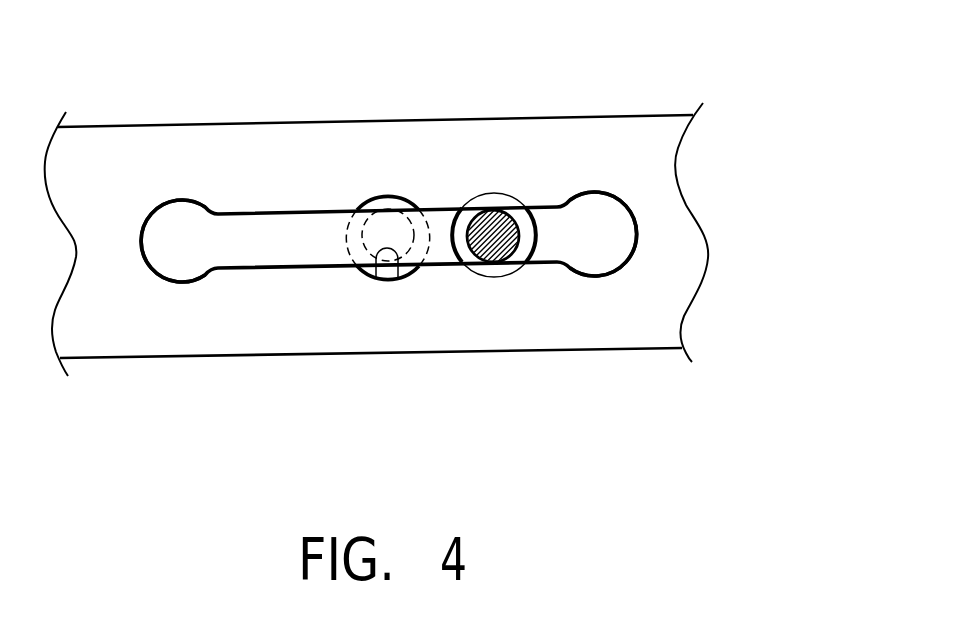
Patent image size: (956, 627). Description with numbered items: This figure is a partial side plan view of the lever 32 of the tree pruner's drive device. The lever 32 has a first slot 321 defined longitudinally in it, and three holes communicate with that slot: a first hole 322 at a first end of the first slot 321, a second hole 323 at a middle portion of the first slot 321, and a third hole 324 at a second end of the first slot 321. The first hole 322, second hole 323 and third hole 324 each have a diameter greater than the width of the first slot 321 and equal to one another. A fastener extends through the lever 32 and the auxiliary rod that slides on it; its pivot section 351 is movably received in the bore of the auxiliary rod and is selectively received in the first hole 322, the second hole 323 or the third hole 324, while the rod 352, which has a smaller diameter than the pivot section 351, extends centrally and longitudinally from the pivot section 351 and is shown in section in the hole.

The lever 32 is at (505, 164).
The first slot 321 is at (275, 238).
The first hole 322 is at (142, 232).
The second hole 323 is at (398, 276).
The third hole 324 is at (634, 235).
The pivot section 351 is at (537, 235).
The rod 352 is at (458, 263).